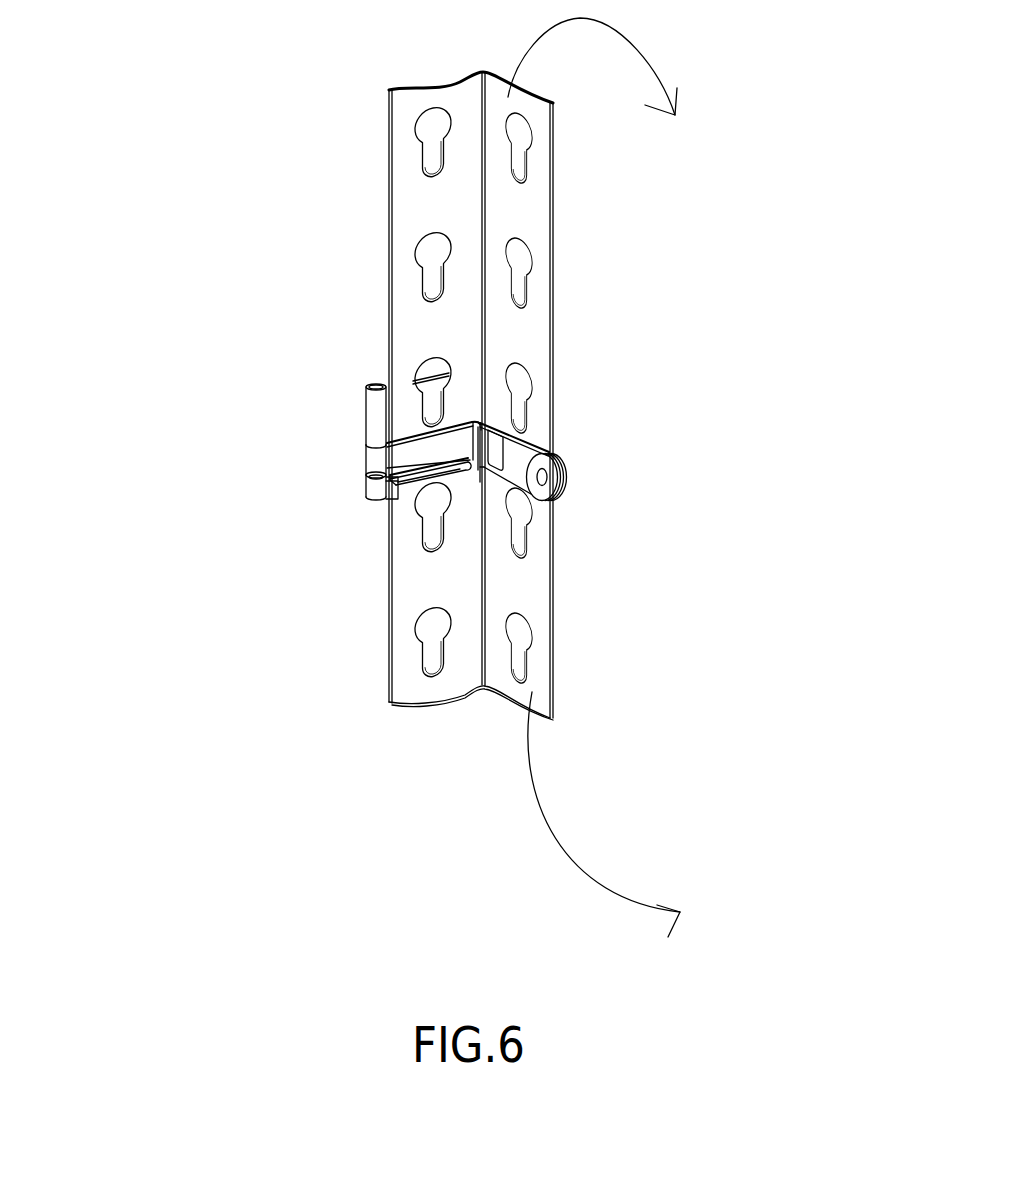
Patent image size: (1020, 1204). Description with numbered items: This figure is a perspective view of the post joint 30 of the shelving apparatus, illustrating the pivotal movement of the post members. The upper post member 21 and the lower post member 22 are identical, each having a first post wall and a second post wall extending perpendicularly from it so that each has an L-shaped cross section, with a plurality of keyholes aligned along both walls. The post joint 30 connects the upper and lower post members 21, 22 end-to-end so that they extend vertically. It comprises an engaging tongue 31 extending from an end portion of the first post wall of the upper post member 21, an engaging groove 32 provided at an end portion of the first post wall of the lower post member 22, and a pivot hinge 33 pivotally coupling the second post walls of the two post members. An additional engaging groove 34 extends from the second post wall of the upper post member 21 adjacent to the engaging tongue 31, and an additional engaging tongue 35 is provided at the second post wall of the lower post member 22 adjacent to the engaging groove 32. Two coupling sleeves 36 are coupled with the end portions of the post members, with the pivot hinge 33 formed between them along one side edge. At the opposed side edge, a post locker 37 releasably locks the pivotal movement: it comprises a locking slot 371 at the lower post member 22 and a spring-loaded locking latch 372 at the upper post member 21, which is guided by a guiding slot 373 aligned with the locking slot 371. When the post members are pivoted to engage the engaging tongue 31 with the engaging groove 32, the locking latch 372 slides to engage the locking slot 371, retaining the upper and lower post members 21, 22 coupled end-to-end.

The upper post member 21 is at (551, 396).
The lower post member 22 is at (530, 607).
The post joint 30 is at (439, 485).
The engaging tongue 31 is at (403, 487).
The engaging groove 32 is at (425, 490).
The pivot hinge 33 is at (552, 482).
The additional engaging groove 34 is at (492, 422).
The additional engaging tongue 35 is at (495, 428).
The coupling sleeve 36 is at (588, 483).
The post locker 37 is at (230, 442).
The locking slot 371 is at (362, 493).
The locking latch 372 is at (370, 497).
The guiding slot 373 is at (362, 458).